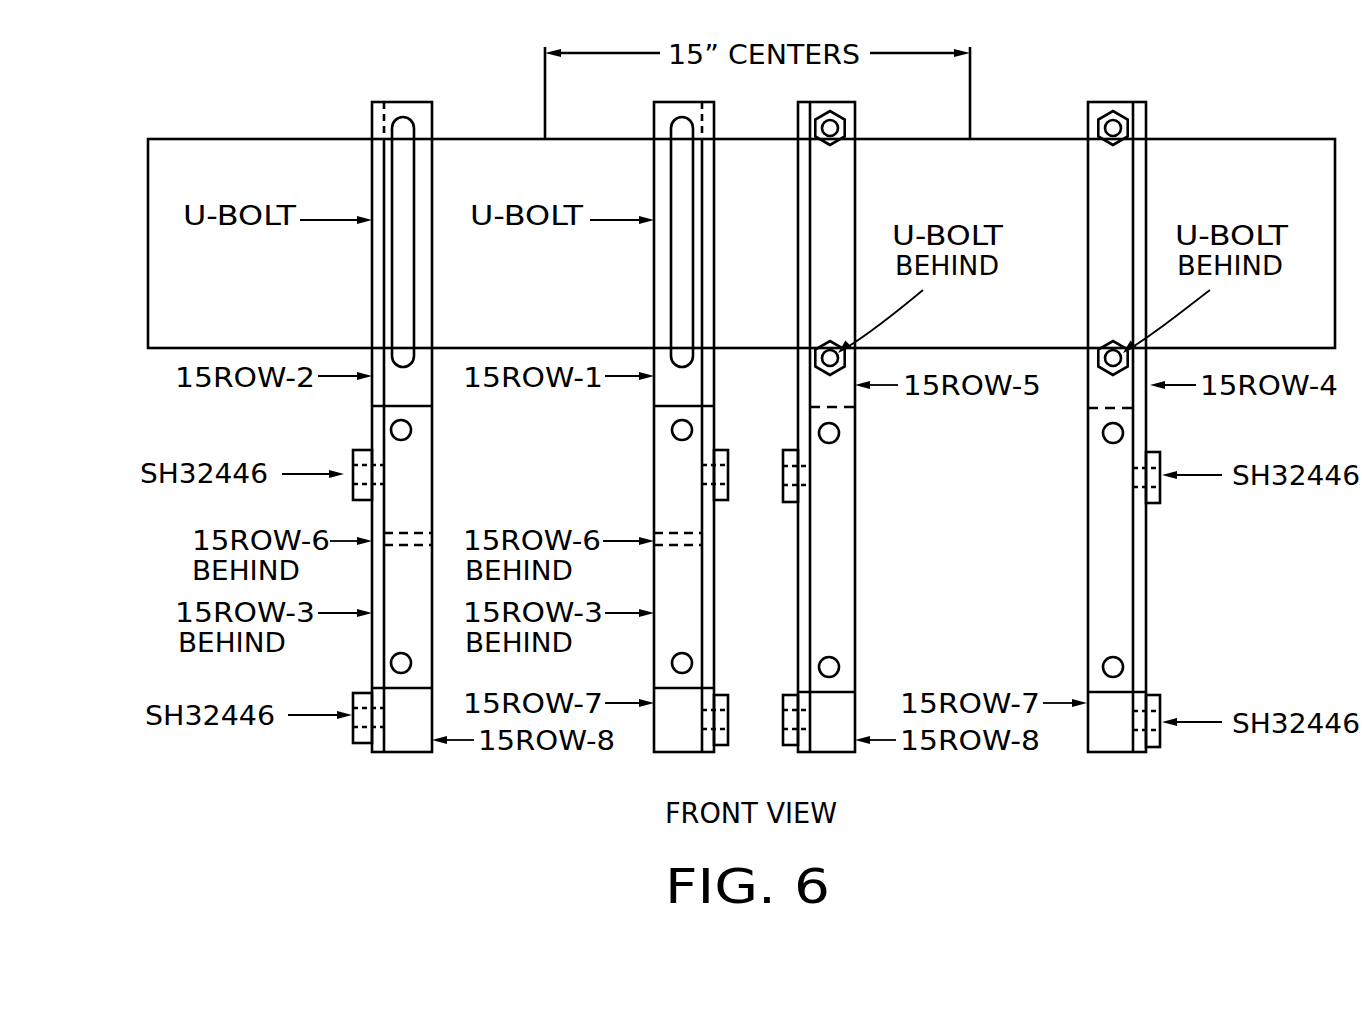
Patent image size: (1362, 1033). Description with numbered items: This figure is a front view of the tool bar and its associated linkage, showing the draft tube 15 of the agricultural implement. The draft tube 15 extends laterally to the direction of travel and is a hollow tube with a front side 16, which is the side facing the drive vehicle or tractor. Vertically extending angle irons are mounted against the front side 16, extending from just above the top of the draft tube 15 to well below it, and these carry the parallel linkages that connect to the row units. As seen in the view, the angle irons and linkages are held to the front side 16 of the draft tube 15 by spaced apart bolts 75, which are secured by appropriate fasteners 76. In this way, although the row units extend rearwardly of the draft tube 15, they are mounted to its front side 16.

The draft tube 15 is at (741, 397).
The front side 16 is at (1262, 189).
The bolts 75 is at (405, 198).
The fasteners 76 is at (846, 118).